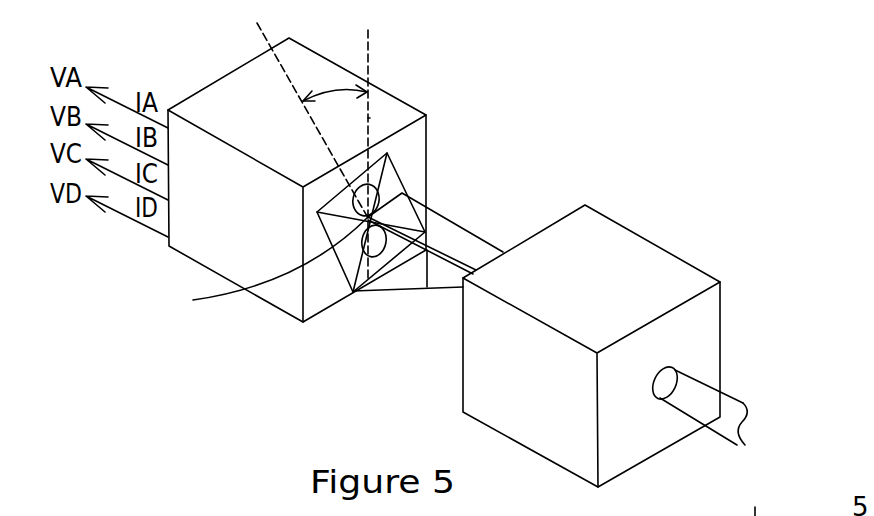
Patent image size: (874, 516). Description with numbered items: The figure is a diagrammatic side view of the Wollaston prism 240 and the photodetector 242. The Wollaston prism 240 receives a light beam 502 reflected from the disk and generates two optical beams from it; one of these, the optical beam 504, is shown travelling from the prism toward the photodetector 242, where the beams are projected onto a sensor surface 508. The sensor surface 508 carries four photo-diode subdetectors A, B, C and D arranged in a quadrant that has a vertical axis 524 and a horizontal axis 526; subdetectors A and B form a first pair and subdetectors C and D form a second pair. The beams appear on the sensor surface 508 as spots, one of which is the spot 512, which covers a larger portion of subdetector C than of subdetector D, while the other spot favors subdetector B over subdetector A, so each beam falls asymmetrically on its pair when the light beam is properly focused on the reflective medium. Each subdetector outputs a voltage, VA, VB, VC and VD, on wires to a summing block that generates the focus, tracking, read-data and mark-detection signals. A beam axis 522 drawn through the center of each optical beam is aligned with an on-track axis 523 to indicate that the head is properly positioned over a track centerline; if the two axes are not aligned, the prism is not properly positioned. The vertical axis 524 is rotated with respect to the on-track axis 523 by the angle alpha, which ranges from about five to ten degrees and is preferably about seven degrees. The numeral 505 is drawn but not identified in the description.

The Wollaston prism 240 is at (518, 445).
The photodetector 242 is at (192, 259).
The light beam 502 is at (730, 397).
The optical beam 504 is at (447, 218).
The beam axis line 505 is at (427, 288).
The sensor surface 508 is at (388, 166).
The spot 512 is at (378, 190).
The beam axis 522 is at (369, 41).
The on-track axis 523 is at (368, 118).
The vertical axis 524 is at (263, 33).
The horizontal axis 526 is at (255, 267).